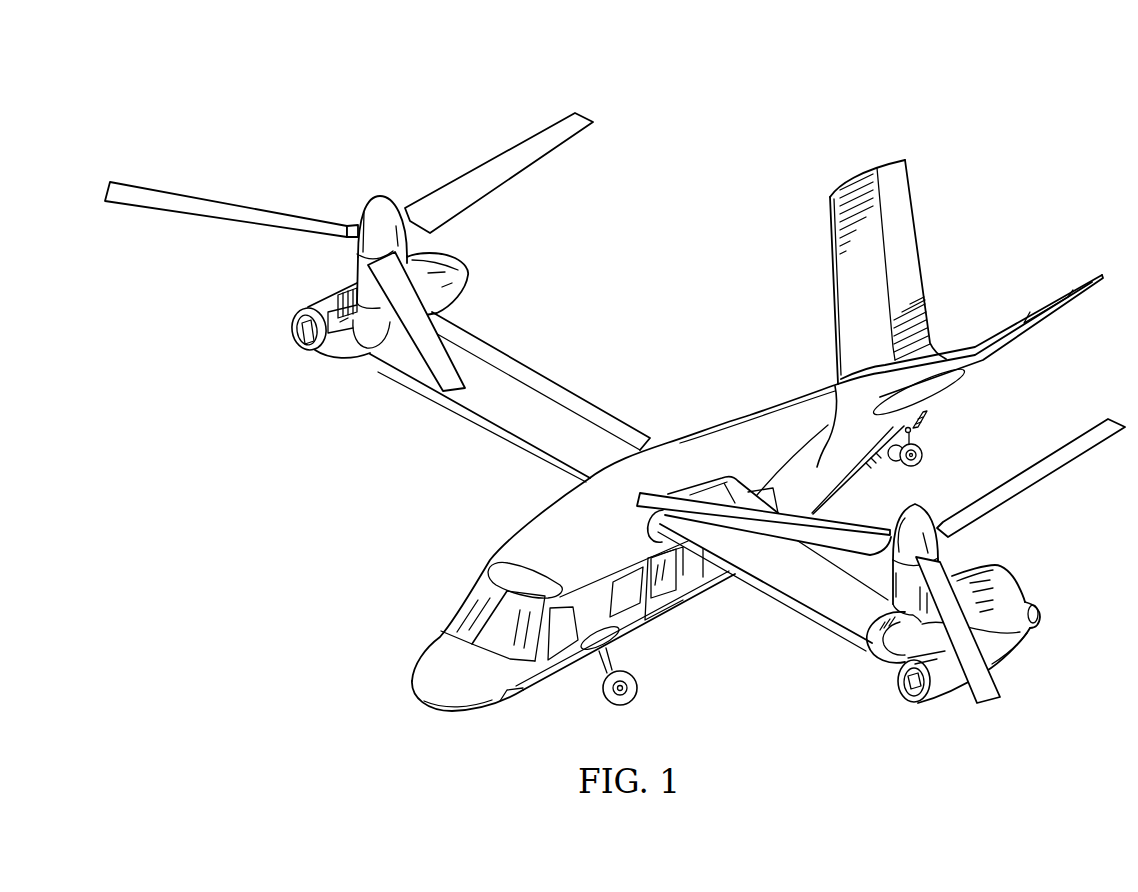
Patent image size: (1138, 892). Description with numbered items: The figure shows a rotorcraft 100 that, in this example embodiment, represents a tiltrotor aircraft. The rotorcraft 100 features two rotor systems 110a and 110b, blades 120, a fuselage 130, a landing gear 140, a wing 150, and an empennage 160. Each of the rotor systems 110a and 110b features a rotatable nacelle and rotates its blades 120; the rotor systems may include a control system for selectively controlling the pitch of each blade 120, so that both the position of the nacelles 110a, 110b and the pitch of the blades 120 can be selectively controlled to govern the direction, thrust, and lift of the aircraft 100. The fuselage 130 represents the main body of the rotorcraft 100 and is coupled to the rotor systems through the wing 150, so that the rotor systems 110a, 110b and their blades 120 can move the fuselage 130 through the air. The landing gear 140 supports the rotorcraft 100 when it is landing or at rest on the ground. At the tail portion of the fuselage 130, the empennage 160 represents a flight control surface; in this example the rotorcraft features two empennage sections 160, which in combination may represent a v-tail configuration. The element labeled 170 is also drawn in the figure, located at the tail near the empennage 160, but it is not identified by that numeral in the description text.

The rotorcraft 100 is at (732, 124).
The rotor system 110a is at (508, 259).
The rotor system 110b is at (1062, 650).
The blades 120 is at (490, 160).
The fuselage 130 is at (459, 713).
The landing gear 140 is at (640, 681).
The wing 150 is at (475, 425).
The empennage 160 is at (909, 190).
The horizontal stabilizer 170 is at (1003, 348).